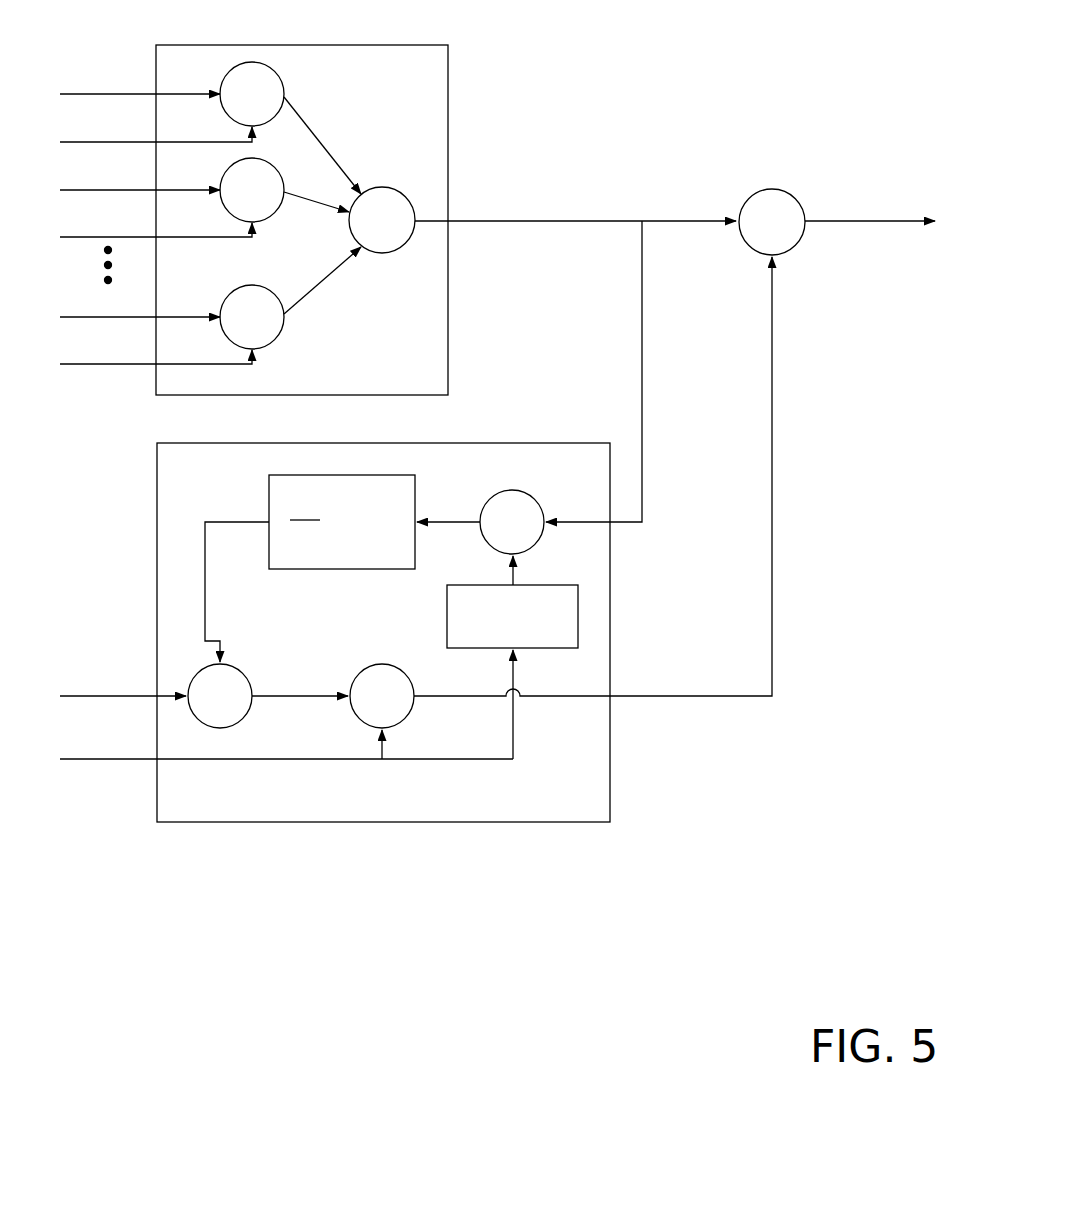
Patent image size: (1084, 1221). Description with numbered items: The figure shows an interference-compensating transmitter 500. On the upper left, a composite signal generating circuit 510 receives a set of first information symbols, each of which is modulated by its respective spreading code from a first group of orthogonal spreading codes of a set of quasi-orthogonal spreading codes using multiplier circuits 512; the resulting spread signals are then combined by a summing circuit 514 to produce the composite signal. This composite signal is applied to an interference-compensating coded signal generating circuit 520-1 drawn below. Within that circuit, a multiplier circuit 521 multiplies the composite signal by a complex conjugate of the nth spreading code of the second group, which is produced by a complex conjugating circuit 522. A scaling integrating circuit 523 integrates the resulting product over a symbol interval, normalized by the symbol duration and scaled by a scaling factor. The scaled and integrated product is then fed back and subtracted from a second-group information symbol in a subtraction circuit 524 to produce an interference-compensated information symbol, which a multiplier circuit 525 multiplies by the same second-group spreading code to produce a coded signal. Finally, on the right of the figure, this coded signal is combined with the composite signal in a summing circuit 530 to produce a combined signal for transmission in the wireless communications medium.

The interference-compensating transmitter 500 is at (650, 88).
The composite signal generating circuit 510 is at (302, 45).
The multiplier circuits 512 is at (229, 72).
The summing circuit 514 is at (380, 193).
The interference-compensating coded signal generating circuit 520-1 is at (383, 443).
The multiplier circuit 521 is at (514, 491).
The complex conjugating circuit 522 is at (447, 615).
The scaling integrating circuit 523 is at (345, 475).
The subtraction circuit 524 is at (222, 728).
The multiplier circuit 525 is at (379, 665).
The summing circuit 530 is at (772, 190).